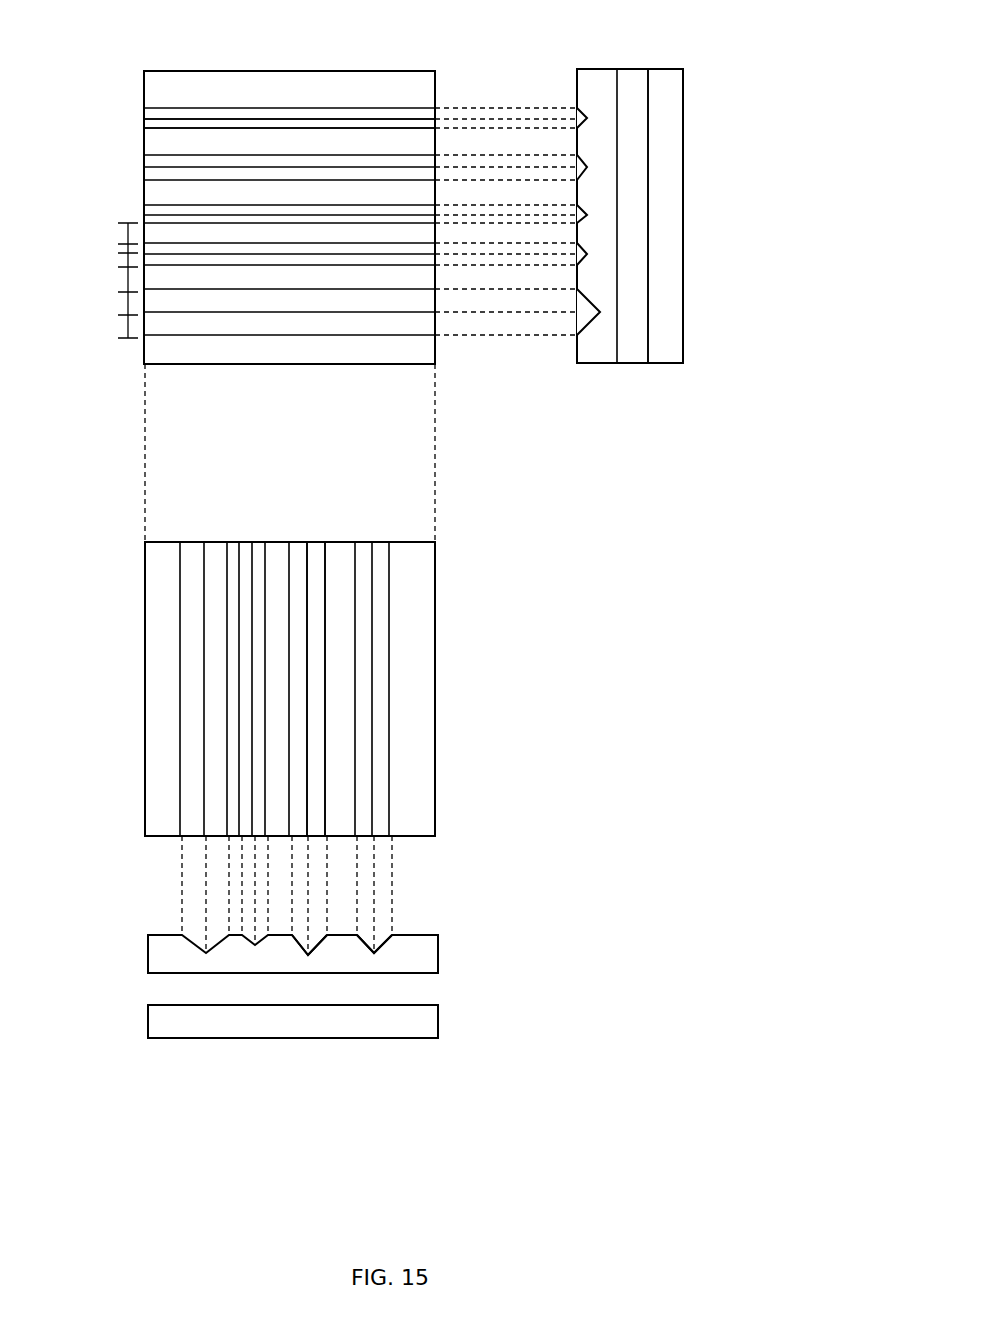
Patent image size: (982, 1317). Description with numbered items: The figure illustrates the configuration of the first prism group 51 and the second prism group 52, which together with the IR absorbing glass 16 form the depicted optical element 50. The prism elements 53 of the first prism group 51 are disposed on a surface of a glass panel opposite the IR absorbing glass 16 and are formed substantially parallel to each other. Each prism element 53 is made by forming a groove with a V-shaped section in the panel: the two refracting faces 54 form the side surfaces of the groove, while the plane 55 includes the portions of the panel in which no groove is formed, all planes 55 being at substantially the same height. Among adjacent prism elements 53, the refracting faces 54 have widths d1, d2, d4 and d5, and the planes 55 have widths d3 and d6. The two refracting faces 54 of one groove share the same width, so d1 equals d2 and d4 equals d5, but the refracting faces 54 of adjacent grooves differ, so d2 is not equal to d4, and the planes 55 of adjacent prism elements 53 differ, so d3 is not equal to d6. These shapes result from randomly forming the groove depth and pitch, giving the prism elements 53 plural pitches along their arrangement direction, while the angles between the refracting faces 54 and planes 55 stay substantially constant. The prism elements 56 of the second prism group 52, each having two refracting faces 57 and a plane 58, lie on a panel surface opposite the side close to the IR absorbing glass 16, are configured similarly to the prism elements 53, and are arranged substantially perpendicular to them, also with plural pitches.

The IR absorbing glass 16 is at (634, 63).
The optical element 50 is at (555, 387).
The first prism group 51 is at (174, 78).
The second prism group 52 is at (670, 63).
The prism element 53 is at (133, 122).
The refracting face 54 is at (229, 118).
The plane 55 is at (278, 135).
The prism element 56 is at (253, 536).
The refracting face 57 is at (300, 558).
The plane 58 is at (283, 588).
The width of refracting face d1 is at (128, 327).
The width of refracting face d2 is at (128, 305).
The width of plane d3 is at (128, 280).
The width of refracting face d4 is at (128, 263).
The width of refracting face d5 is at (128, 250).
The width of plane d6 is at (128, 237).